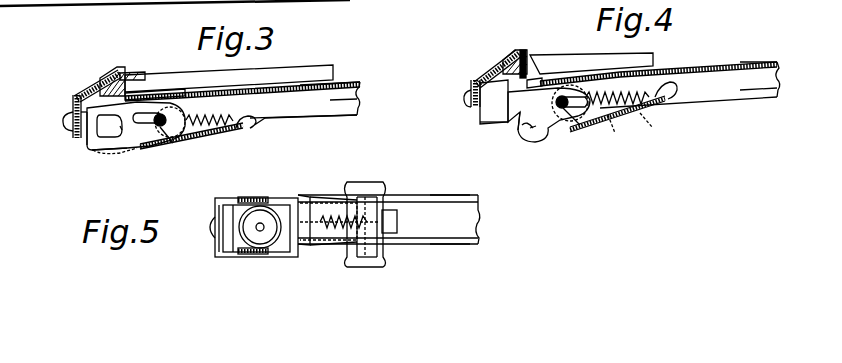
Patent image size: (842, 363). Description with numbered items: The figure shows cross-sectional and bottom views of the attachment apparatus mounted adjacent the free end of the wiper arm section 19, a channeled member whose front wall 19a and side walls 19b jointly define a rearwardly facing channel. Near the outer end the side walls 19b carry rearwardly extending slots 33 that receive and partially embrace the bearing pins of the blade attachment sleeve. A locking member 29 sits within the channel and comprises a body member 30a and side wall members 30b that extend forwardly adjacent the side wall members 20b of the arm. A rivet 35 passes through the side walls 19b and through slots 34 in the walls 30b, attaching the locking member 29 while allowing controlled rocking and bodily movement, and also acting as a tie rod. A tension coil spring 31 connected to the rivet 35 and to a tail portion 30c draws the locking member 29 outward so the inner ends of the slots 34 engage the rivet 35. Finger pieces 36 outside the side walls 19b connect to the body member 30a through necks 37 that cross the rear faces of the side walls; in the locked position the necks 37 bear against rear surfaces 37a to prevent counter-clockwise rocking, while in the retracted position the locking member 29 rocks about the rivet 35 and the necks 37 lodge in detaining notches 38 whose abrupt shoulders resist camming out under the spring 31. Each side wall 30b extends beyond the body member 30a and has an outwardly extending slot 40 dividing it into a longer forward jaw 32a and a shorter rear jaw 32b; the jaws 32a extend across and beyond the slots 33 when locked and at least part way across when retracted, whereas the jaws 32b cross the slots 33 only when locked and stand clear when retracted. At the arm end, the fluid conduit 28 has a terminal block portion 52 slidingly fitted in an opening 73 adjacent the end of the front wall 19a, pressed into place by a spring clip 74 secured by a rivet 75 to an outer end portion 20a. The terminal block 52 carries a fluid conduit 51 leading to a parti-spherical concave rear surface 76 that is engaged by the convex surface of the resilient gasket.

In FIG. 3, the wiper arm section 19 is at (362, 118).
In FIG. 4, the wiper arm section 19 is at (788, 66).
In FIG. 5, the wiper arm section 19 is at (486, 238).
In FIG. 3, the front wall 19a is at (362, 84).
In FIG. 4, the front wall 19a is at (720, 64).
In FIG. 5, the front wall 19a is at (478, 218).
In FIG. 3, the side walls 19b is at (360, 98).
In FIG. 4, the side walls 19b is at (748, 72).
In FIG. 5, the side walls 19b is at (448, 195).
In FIG. 3, the outer end portion 20a is at (82, 130).
In FIG. 3, the side wall members 20b is at (303, 120).
In FIG. 3, the fluid conduit 28 is at (335, 72).
In FIG. 4, the fluid conduit 28 is at (654, 60).
In FIG. 3, the locking member 29 is at (196, 146).
In FIG. 4, the locking member 29 is at (670, 107).
In FIG. 5, the locking member 29 is at (399, 220).
In FIG. 4, the body member 30a is at (588, 122).
In FIG. 5, the body member 30a is at (312, 208).
In FIG. 3, the side wall members 30b is at (185, 112).
In FIG. 5, the side wall members 30b is at (296, 192).
In FIG. 3, the tail portion 30c is at (254, 127).
In FIG. 3, the tension coil spring 31 is at (233, 117).
In FIG. 4, the tension coil spring 31 is at (668, 84).
In FIG. 3, the forward jaw 32a is at (90, 148).
In FIG. 4, the forward jaw 32a is at (512, 124).
In FIG. 5, the forward jaw 32a is at (222, 199).
In FIG. 3, the rear jaw 32b is at (100, 152).
In FIG. 4, the rear jaw 32b is at (523, 137).
In FIG. 5, the rear jaw 32b is at (240, 197).
In FIG. 3, the slots 33 is at (110, 150).
In FIG. 4, the slots 33 is at (520, 130).
In FIG. 5, the slots 33 is at (260, 197).
In FIG. 3, the slots 34 is at (145, 124).
In FIG. 3, the rivet 35 is at (165, 126).
In FIG. 4, the rivet 35 is at (564, 110).
In FIG. 5, the rivet 35 is at (305, 257).
In FIG. 5, the finger pieces 36 is at (378, 184).
In FIG. 5, the necks 37 is at (364, 182).
In FIG. 4, the rear surfaces 37a is at (620, 132).
In FIG. 4, the detaining notches 38 is at (653, 129).
In FIG. 5, the detaining notches 38 is at (386, 208).
In FIG. 3, the slot 40 is at (110, 150).
In FIG. 4, the slot 40 is at (537, 140).
In FIG. 3, the fluid conduit 51 is at (135, 78).
In FIG. 4, the fluid conduit 51 is at (524, 50).
In FIG. 5, the fluid conduit 51 is at (263, 231).
In FIG. 3, the terminal block portion 52 is at (97, 86).
In FIG. 4, the terminal block portion 52 is at (508, 63).
In FIG. 3, the opening 73 is at (160, 93).
In FIG. 4, the opening 73 is at (505, 76).
In FIG. 3, the spring clip 74 is at (74, 96).
In FIG. 4, the spring clip 74 is at (487, 74).
In FIG. 5, the spring clip 74 is at (214, 248).
In FIG. 3, the rivet 75 is at (63, 124).
In FIG. 4, the rivet 75 is at (466, 96).
In FIG. 5, the rivet 75 is at (208, 228).
In FIG. 3, the concave rear surface 76 is at (110, 76).
In FIG. 4, the concave rear surface 76 is at (538, 82).
In FIG. 5, the concave rear surface 76 is at (273, 213).